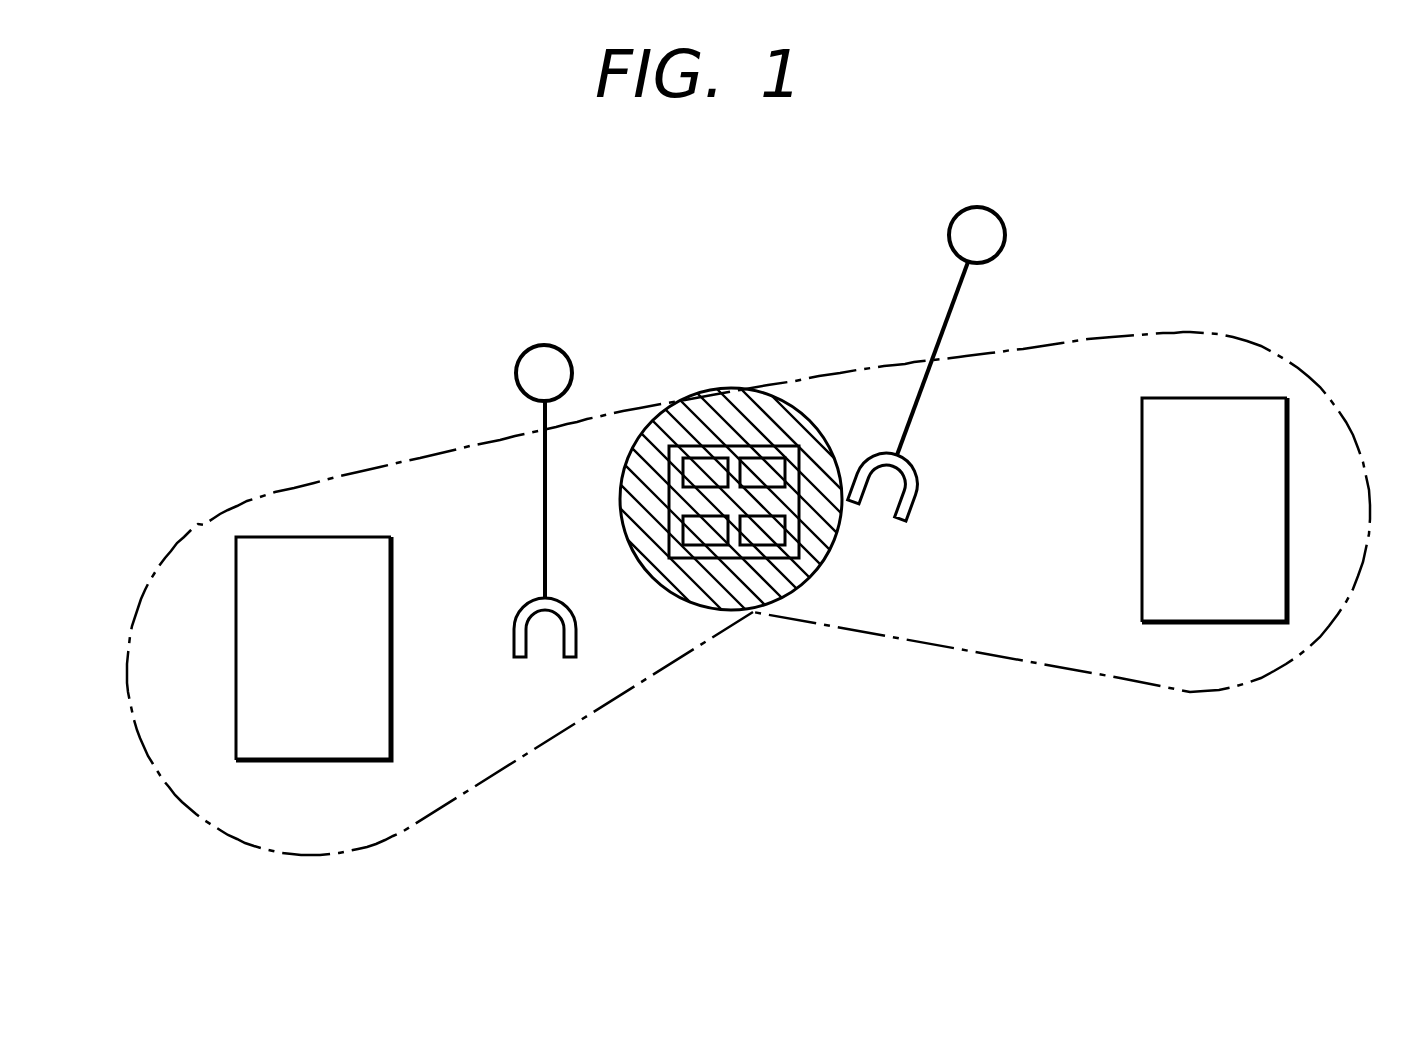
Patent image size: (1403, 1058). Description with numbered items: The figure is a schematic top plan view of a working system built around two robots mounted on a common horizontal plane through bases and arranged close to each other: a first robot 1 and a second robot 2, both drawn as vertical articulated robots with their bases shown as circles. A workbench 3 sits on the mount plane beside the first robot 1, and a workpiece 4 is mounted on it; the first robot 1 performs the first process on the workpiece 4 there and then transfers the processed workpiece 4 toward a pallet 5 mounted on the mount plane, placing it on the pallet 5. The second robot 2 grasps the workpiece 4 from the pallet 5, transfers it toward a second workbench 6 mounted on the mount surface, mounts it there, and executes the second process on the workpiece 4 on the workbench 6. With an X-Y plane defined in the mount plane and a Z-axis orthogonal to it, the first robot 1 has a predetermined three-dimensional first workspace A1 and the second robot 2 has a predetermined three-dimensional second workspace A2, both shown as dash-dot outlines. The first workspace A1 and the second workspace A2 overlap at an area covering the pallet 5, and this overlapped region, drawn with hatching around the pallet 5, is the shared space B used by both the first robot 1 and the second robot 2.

The first robot 1 is at (559, 332).
The second robot 2 is at (1016, 214).
The workbench 3 is at (278, 537).
The workpiece 4 is at (768, 458).
The pallet 5 is at (705, 446).
The workbench 6 is at (1247, 398).
The shared space B is at (723, 592).
The first workspace A1 is at (478, 770).
The second workspace A2 is at (1090, 668).